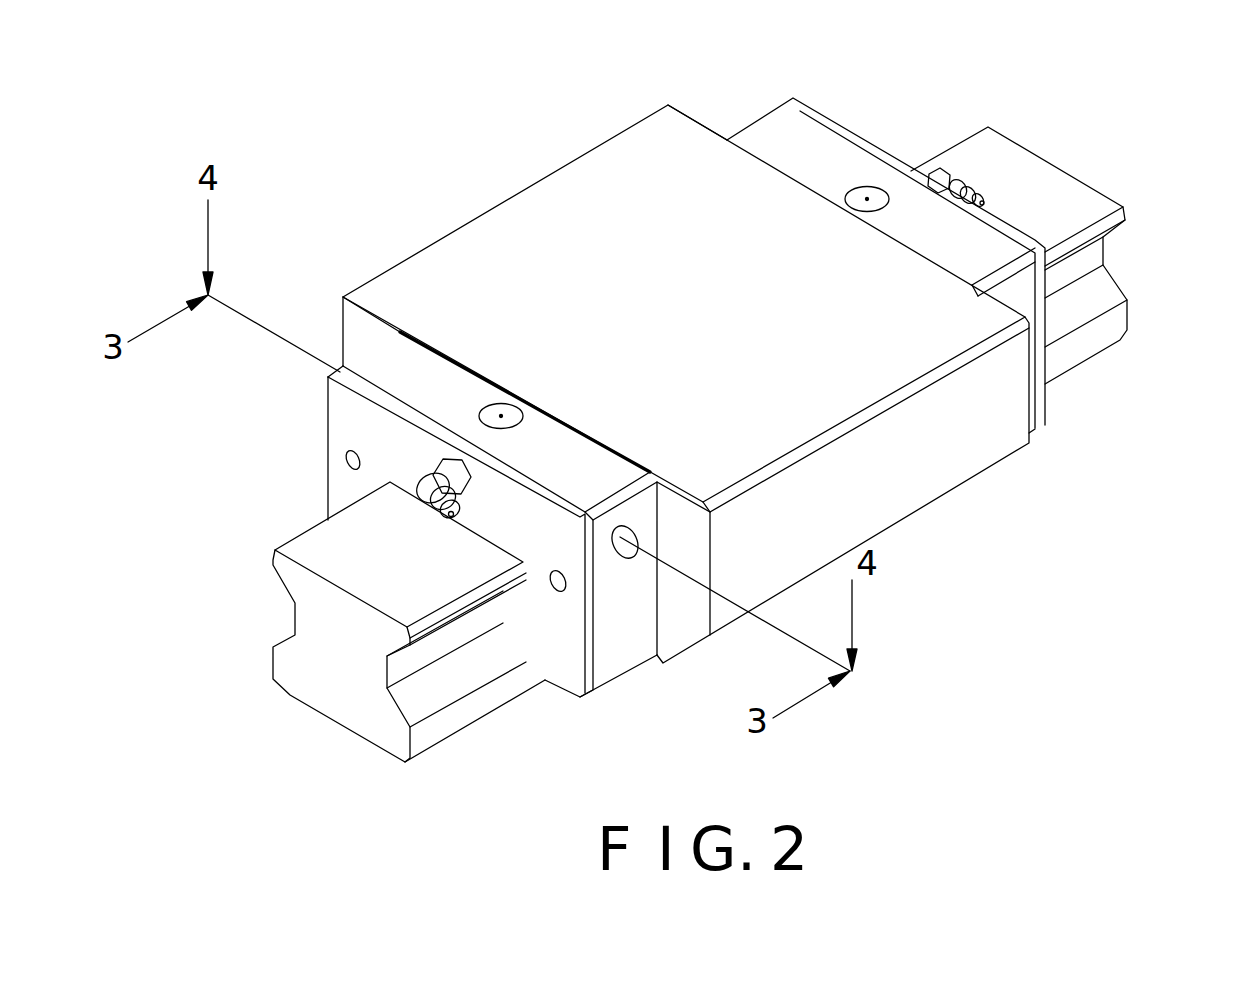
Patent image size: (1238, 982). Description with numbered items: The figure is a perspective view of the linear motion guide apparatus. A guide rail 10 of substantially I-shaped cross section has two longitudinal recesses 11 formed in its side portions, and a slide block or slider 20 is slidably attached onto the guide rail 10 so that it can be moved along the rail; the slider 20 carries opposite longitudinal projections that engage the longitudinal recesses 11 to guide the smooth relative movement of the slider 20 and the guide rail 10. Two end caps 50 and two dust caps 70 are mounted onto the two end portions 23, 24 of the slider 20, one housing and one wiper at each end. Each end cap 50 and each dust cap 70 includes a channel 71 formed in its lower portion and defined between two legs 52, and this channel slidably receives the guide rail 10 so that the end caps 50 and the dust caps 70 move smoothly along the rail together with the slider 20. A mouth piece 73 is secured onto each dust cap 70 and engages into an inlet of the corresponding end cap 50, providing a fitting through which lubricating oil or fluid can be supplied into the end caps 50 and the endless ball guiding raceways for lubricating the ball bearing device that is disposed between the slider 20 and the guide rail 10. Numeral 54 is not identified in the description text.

The guide rail 10 is at (1103, 295).
The longitudinal recesses 11 is at (412, 667).
The slider 20 is at (548, 193).
The end portion of slider 23 is at (348, 320).
The end portion of slider 24 is at (705, 127).
The end cap 50 is at (822, 160).
The legs 52 is at (623, 647).
The top scraper seal 54 is at (427, 337).
The dust cap 70 is at (565, 668).
The channel 71 is at (492, 610).
The mouth piece 73 is at (420, 483).